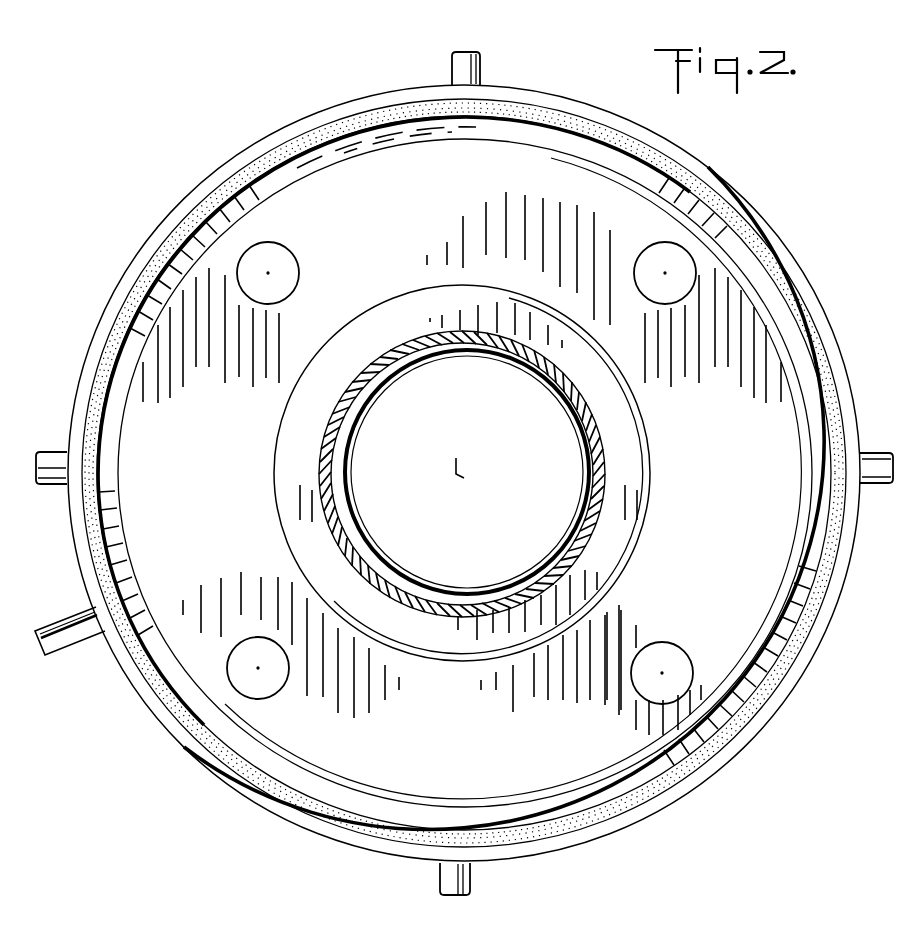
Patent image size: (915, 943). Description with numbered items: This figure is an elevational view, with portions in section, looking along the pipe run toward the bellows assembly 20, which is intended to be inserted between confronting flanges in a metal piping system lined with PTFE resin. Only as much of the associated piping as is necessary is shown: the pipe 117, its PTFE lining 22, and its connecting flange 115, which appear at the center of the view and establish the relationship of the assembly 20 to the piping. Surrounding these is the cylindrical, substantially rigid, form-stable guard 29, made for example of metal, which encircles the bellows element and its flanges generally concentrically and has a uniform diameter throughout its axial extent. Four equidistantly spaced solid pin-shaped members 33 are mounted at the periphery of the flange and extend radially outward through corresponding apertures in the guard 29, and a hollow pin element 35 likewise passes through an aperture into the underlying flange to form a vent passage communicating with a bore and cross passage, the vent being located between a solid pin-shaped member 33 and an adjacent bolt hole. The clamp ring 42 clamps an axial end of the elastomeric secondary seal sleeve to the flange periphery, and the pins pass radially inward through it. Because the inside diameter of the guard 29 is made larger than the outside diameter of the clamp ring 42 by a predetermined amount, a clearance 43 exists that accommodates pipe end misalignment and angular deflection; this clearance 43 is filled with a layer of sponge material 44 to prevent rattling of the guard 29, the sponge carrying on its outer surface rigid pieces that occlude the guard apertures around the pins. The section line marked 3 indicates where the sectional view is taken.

The section line 3- 3 is at (470, 33).
The bellows assembly 20 is at (803, 240).
The lining 22 is at (574, 489).
The guard 29 is at (309, 116).
The pin-shaped members 33 is at (481, 63).
The hollow pin element 35 is at (58, 633).
The clamp ring 42 is at (587, 145).
The clearance 43 is at (393, 110).
The sponge material 44 is at (268, 160).
The connecting flange 115 is at (755, 345).
The pipe 117 is at (590, 414).